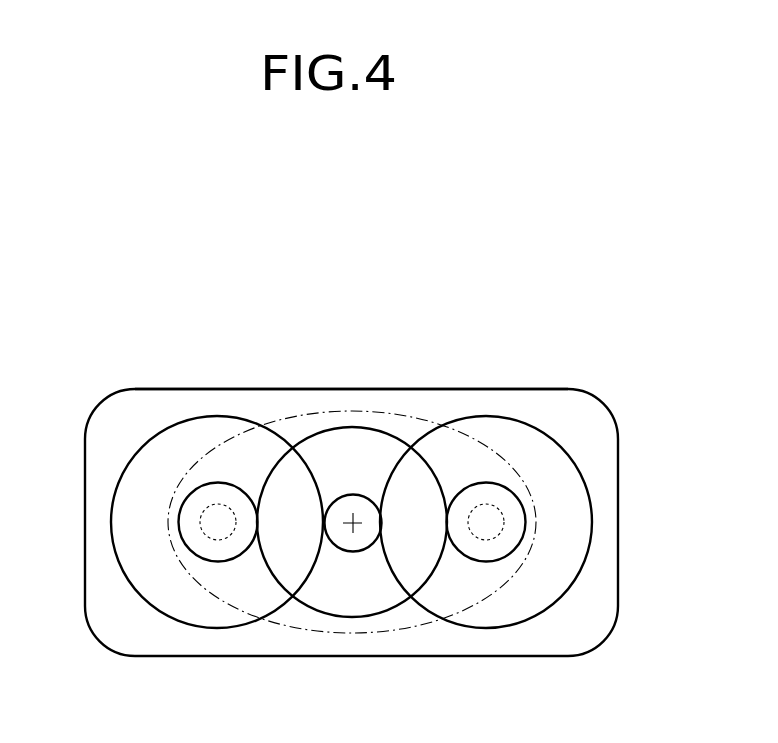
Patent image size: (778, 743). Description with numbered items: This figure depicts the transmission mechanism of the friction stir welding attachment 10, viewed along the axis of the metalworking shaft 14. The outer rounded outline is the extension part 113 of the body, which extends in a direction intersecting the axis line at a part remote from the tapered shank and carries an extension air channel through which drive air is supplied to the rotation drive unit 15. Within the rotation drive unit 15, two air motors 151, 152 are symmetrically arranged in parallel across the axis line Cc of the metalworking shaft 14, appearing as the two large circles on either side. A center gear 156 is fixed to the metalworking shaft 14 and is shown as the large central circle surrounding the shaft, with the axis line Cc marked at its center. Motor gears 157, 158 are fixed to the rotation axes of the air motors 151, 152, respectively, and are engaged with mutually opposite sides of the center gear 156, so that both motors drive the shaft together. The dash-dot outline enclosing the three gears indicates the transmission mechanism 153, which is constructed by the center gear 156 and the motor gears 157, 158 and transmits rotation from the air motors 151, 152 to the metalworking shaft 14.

The device 10 is at (78, 313).
The rotation drive unit 15 is at (583, 439).
The extension part 113 is at (334, 388).
The transmission mechanism 153 is at (404, 417).
The air motor 151 is at (198, 432).
The air motor 152 is at (497, 432).
The center gear 156 is at (323, 587).
The motor gear 157 is at (205, 543).
The motor gear 158 is at (498, 543).
The metalworking shaft 14 is at (347, 542).
The axis line Cc is at (354, 526).